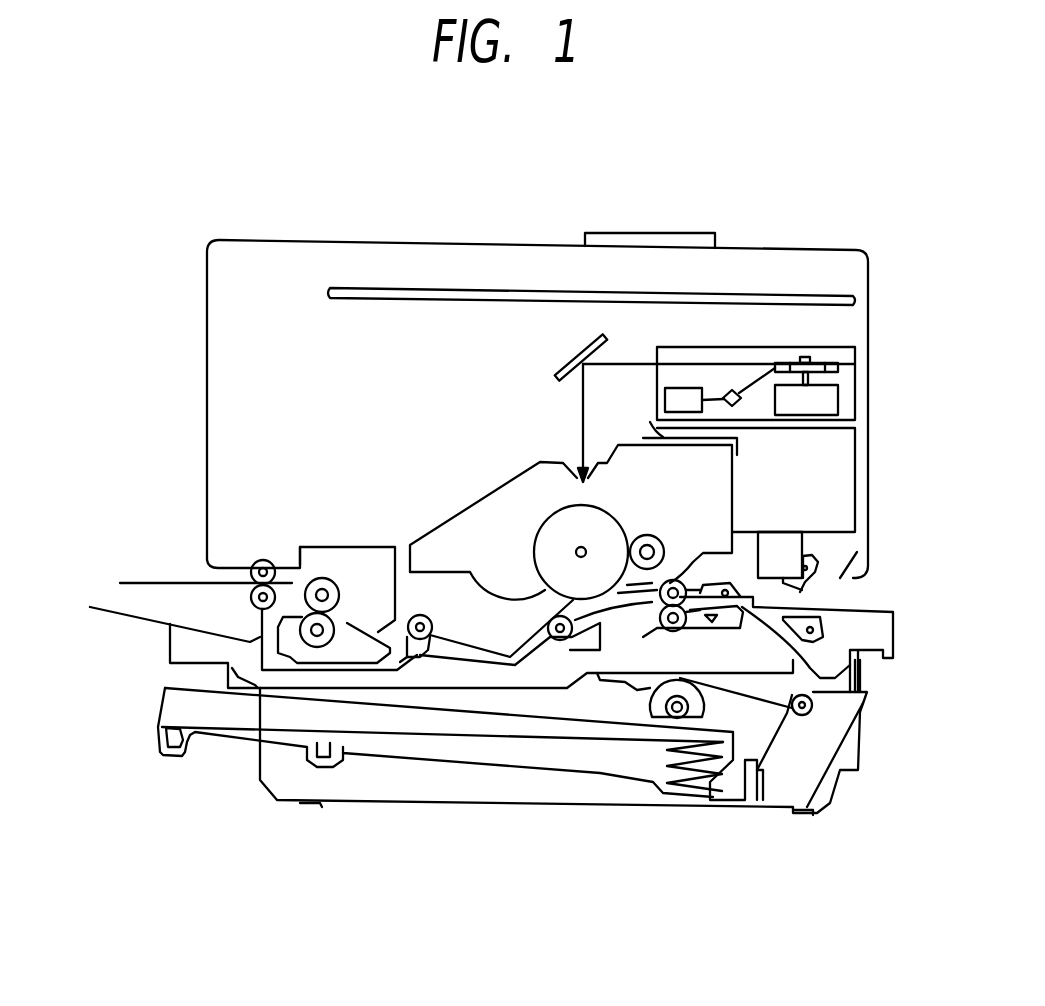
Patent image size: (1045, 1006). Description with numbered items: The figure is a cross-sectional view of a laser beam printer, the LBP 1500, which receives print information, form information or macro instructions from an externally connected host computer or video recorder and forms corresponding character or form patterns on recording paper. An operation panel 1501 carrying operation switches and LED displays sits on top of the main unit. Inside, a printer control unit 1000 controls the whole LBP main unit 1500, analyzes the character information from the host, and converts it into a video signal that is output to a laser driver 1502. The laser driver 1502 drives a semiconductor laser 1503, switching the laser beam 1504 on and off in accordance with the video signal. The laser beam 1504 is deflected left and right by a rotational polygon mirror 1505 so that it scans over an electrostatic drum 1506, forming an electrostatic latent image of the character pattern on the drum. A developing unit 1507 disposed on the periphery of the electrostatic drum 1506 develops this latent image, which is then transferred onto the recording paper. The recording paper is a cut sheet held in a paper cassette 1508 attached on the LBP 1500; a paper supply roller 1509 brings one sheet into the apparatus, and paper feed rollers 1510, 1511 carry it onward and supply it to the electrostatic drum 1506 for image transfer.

The printer control unit 1000 is at (843, 296).
The LBP 1500 is at (819, 247).
The operation panel 1501 is at (672, 233).
The laser driver 1502 is at (665, 401).
The semiconductor laser 1503 is at (738, 403).
The laser beam 1504 is at (718, 362).
The rotational polygon mirror 1505 is at (838, 367).
The electrostatic drum 1506 is at (537, 503).
The developing unit 1507 is at (447, 535).
The paper cassette 1508 is at (153, 727).
The paper supply roller 1509 is at (650, 714).
The paper feed roller 1510 is at (797, 717).
The paper feed roller 1511 is at (657, 632).